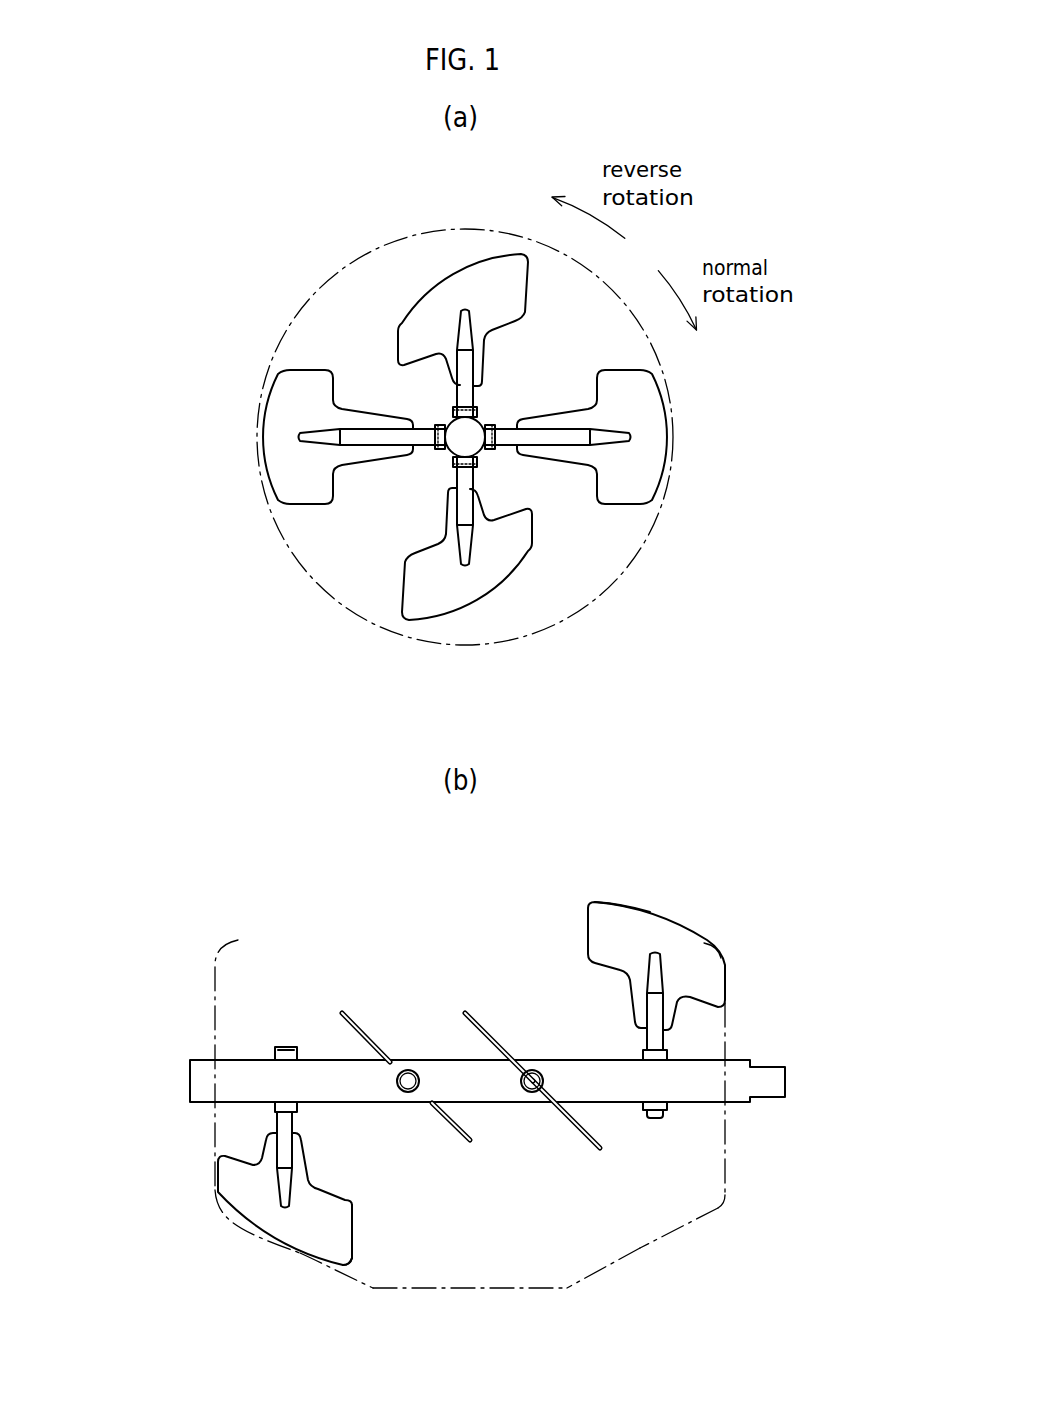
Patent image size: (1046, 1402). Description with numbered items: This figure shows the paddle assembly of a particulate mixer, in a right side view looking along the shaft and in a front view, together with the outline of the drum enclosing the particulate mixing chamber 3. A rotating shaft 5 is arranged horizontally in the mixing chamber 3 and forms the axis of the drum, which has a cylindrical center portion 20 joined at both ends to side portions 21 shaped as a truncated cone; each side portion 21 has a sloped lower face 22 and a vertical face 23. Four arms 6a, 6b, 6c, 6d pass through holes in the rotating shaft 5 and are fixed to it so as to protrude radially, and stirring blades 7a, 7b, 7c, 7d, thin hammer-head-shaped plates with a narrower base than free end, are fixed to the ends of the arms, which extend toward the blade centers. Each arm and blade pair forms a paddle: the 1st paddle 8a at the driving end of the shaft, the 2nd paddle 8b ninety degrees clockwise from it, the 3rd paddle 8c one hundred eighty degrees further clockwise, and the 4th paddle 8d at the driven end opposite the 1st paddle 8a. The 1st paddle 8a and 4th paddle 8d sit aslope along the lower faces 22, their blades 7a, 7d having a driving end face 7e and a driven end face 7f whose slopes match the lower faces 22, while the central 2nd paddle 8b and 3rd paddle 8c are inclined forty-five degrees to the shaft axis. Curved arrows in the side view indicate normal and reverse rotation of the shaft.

The particulate mixing chamber 3 is at (693, 1195).
The rotating shaft 5 is at (755, 1077).
The arm 6a is at (288, 1123).
The arm 6b is at (407, 1072).
The arm 6c is at (535, 1066).
The arm 6d is at (652, 1038).
The stirring blade 7a is at (337, 1237).
The stirring blade 7b is at (350, 1017).
The stirring blade 7c is at (476, 1016).
The stirring blade 7d is at (602, 908).
The driving end face 7e is at (345, 1267).
The driven end face 7f is at (693, 935).
The 1st paddle 8a is at (376, 586).
The 2nd paddle 8b is at (628, 503).
The 3rd paddle 8c is at (301, 358).
The 4th paddle 8d is at (487, 244).
The center portion 20 is at (593, 587).
The side portion 21 is at (268, 1260).
The lower face 22 is at (335, 1267).
The vertical face 23 is at (213, 1133).